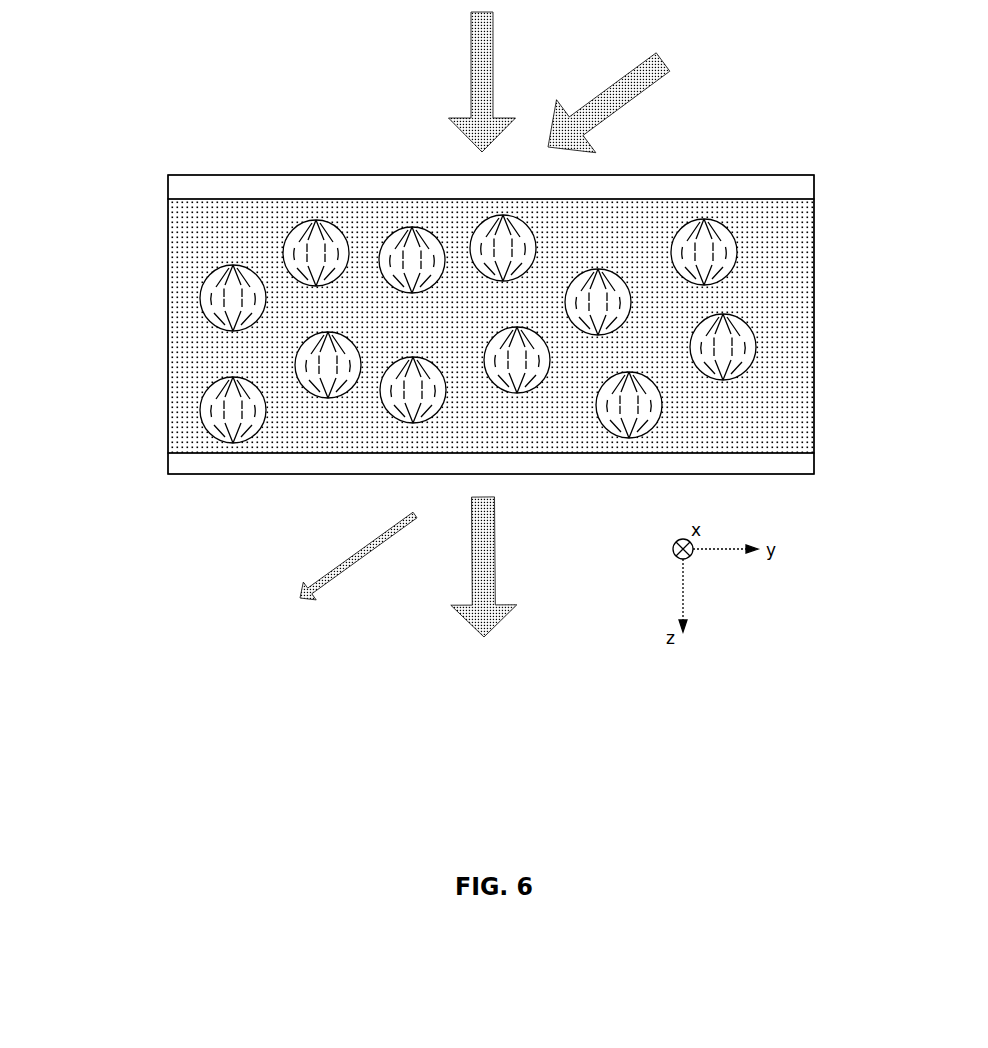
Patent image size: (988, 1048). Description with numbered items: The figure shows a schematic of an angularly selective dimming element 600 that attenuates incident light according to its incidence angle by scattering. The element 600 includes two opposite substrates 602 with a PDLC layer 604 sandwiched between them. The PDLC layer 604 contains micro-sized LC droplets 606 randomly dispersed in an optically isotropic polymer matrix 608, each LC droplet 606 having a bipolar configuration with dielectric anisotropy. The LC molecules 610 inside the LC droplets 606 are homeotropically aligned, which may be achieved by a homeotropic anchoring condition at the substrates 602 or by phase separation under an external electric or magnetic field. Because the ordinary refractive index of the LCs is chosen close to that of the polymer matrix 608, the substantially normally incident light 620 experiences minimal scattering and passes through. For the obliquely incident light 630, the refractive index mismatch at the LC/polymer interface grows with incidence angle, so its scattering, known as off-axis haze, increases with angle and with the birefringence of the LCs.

The angularly selective dimming element 600 is at (152, 31).
The substrates 602 is at (183, 181).
The PDLC layer 604 is at (170, 248).
The LC droplets 606 is at (202, 417).
The polymer matrix 608 is at (204, 321).
The LC molecules 610 is at (757, 340).
The substantially normally incident light 620 is at (483, 32).
The obliquely incident light 630 is at (638, 89).